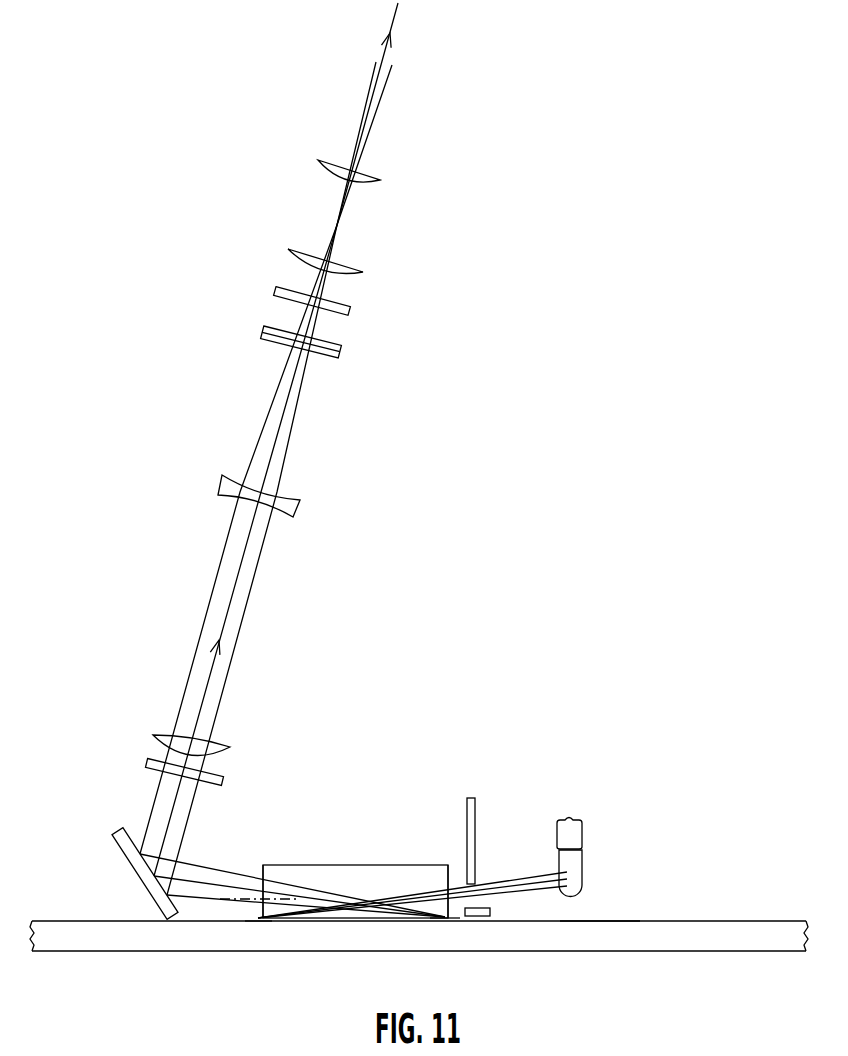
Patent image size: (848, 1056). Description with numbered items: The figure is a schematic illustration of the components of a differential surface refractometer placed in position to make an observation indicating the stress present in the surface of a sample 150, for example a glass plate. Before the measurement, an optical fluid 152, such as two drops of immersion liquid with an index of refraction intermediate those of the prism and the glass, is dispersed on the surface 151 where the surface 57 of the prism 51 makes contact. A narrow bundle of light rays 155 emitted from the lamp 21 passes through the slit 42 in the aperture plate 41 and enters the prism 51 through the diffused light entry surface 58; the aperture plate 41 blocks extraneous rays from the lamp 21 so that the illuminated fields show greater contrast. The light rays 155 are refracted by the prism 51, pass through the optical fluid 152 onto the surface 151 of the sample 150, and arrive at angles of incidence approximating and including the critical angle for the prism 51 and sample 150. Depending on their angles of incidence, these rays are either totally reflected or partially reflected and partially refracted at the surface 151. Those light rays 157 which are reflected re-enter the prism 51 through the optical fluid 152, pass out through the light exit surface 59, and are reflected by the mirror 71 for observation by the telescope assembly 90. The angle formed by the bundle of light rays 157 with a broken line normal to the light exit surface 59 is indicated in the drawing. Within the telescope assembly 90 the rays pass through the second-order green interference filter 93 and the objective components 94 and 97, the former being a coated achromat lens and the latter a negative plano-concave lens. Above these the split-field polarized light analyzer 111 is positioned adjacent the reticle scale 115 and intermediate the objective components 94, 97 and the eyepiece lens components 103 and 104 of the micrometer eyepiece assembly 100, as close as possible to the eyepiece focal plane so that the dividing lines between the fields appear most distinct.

The micrometer eyepiece assembly 100 is at (296, 187).
The eyepiece lens component 103 is at (380, 180).
The eyepiece lens component 104 is at (298, 250).
The reticle scale 115 is at (276, 290).
The split-field polarized light analyzer 111 is at (262, 333).
The objective component 97 is at (222, 481).
The telescope assembly 90 is at (190, 582).
The objective component 94 is at (153, 737).
The second-order green interference filter 93 is at (147, 762).
The mirror 71 is at (119, 854).
The reflected light rays 157 is at (213, 871).
The prism 51 is at (357, 901).
The light exit surface 59 is at (262, 870).
The diffused light entry surface 58 is at (450, 868).
The surface 57 is at (439, 918).
The aperture plate 41 is at (467, 800).
The slit 42 is at (475, 886).
The light rays 155 is at (531, 877).
The lamp 21 is at (583, 860).
The sample 150 is at (688, 951).
The surface 151 is at (597, 921).
The optical fluid 152 is at (254, 921).